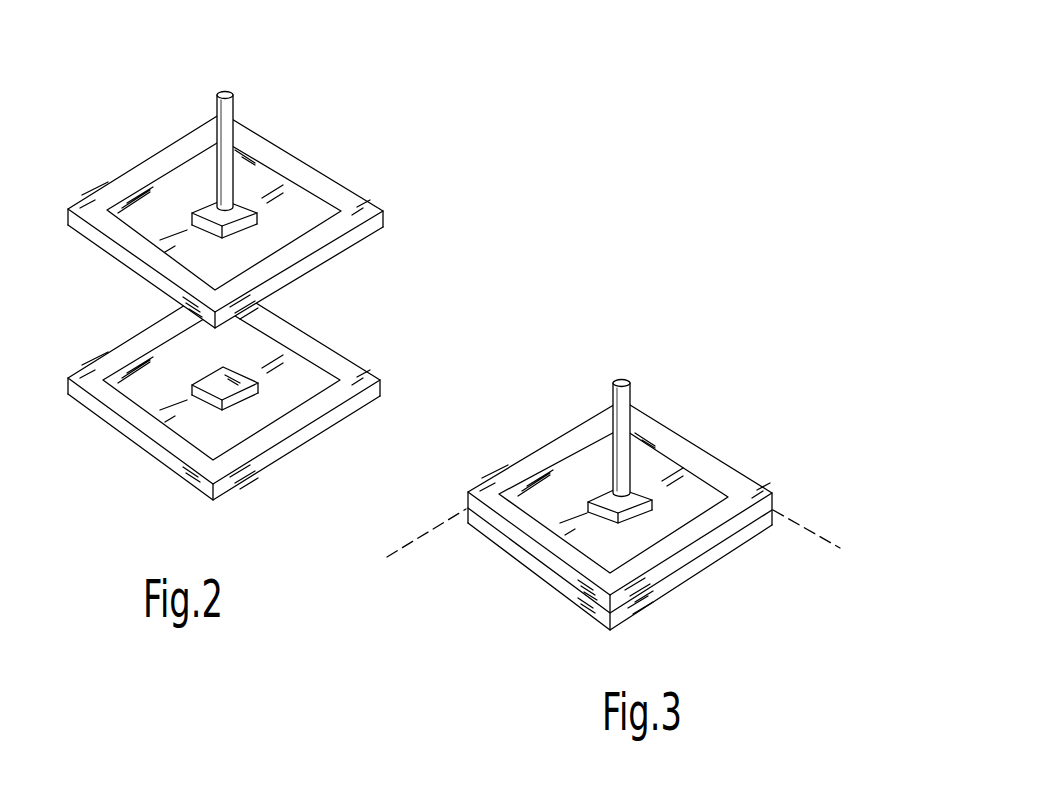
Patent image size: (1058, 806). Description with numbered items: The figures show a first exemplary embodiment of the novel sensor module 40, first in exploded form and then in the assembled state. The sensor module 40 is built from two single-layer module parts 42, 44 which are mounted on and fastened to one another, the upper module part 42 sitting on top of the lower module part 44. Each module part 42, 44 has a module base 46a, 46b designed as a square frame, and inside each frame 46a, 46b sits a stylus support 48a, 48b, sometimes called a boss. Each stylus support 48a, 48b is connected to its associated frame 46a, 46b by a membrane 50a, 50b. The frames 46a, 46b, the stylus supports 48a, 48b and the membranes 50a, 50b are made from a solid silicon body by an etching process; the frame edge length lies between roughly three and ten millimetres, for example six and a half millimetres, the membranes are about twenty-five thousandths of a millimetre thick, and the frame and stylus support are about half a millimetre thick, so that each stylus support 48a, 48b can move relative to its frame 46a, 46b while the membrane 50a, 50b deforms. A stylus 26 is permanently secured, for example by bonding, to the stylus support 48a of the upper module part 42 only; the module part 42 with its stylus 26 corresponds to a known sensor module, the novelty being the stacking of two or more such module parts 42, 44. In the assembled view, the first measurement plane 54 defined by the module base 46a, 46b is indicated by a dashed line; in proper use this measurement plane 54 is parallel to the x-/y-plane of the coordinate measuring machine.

In FIG. 2, the stylus 26 is at (236, 104).
In FIG. 3, the stylus 26 is at (630, 388).
In FIG. 2, the sensor module 40 is at (422, 193).
In FIG. 3, the sensor module 40 is at (720, 430).
In FIG. 2, the upper module part 42 is at (283, 138).
In FIG. 3, the upper module part 42 is at (620, 515).
In FIG. 2, the lower module part 44 is at (343, 353).
In FIG. 2, the module base 46a is at (193, 147).
In FIG. 2, the module base 46b is at (148, 340).
In FIG. 2, the stylus support 48a is at (198, 210).
In FIG. 3, the stylus support 48a is at (590, 493).
In FIG. 2, the stylus support 48b is at (238, 387).
In FIG. 2, the membrane 50a is at (295, 218).
In FIG. 2, the membrane 50b is at (215, 427).
In FIG. 3, the measurement plane 54 is at (420, 538).